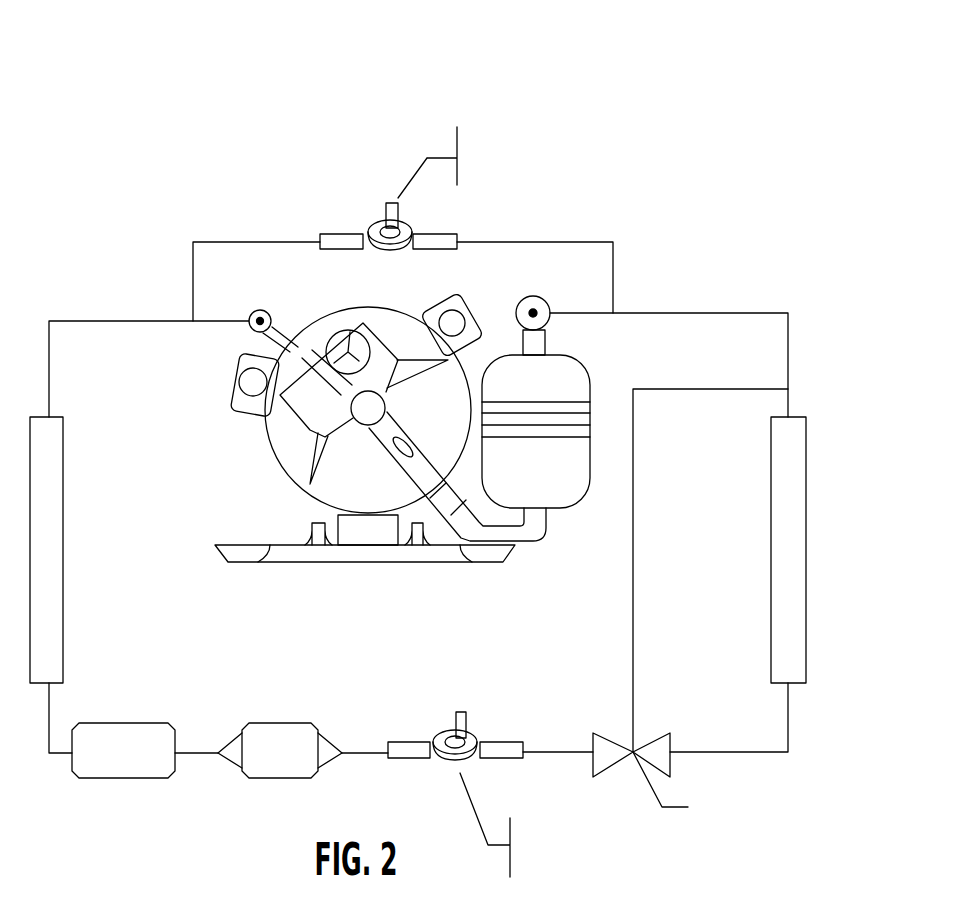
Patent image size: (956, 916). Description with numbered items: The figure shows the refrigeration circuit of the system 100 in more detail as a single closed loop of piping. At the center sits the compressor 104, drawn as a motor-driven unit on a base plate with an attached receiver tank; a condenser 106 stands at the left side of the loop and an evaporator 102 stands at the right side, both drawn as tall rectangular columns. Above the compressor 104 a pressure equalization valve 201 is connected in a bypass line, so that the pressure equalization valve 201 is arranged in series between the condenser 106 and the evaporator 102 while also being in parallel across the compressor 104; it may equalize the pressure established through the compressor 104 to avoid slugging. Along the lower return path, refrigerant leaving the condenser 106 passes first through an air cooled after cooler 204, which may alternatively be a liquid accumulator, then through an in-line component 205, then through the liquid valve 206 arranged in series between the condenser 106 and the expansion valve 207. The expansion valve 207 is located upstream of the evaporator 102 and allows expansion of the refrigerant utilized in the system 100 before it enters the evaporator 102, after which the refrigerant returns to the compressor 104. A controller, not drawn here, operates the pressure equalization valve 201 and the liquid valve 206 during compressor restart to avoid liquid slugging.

The system 100 is at (753, 106).
The pressure equalization valve 201 is at (404, 203).
The compressor 104 is at (440, 298).
The condenser 106 is at (55, 416).
The evaporator 102 is at (795, 416).
The air cooled after cooler 204 is at (112, 722).
The filter drier 205 is at (265, 722).
The liquid valve 206 is at (460, 710).
The expansion valve 207 is at (652, 733).